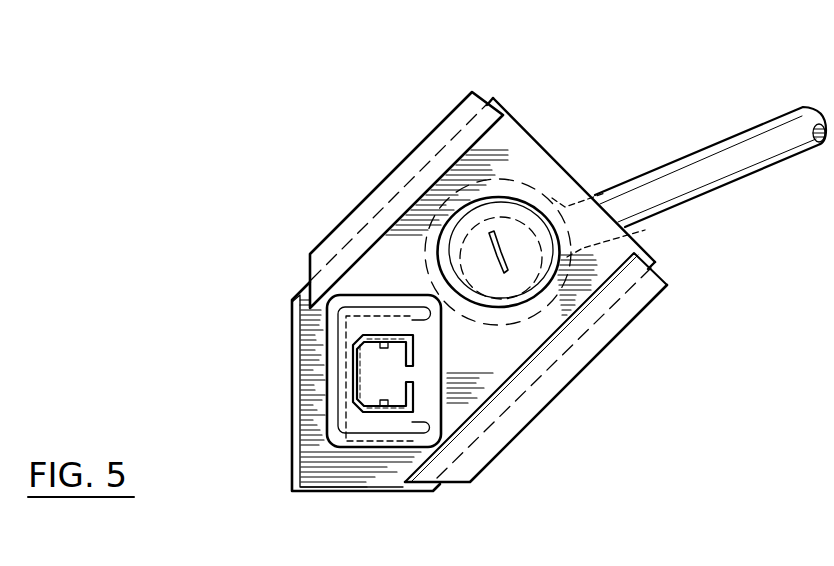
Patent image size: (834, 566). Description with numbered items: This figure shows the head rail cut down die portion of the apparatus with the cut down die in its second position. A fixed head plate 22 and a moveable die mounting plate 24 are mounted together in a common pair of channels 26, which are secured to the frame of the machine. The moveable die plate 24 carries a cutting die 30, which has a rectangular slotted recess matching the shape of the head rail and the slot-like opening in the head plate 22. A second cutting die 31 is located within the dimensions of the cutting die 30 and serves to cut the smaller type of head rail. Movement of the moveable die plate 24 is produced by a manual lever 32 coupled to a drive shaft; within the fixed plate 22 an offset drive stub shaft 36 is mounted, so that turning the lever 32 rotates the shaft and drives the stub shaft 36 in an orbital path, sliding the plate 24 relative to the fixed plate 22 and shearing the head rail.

The head plate 22 is at (290, 363).
The moveable die mounting plate 24 is at (525, 138).
The channels 26 is at (413, 153).
The cutting die 30 is at (333, 400).
The second cutting die 31 is at (412, 392).
The manual lever 32 is at (725, 145).
The offset drive stub shaft 36 is at (513, 262).